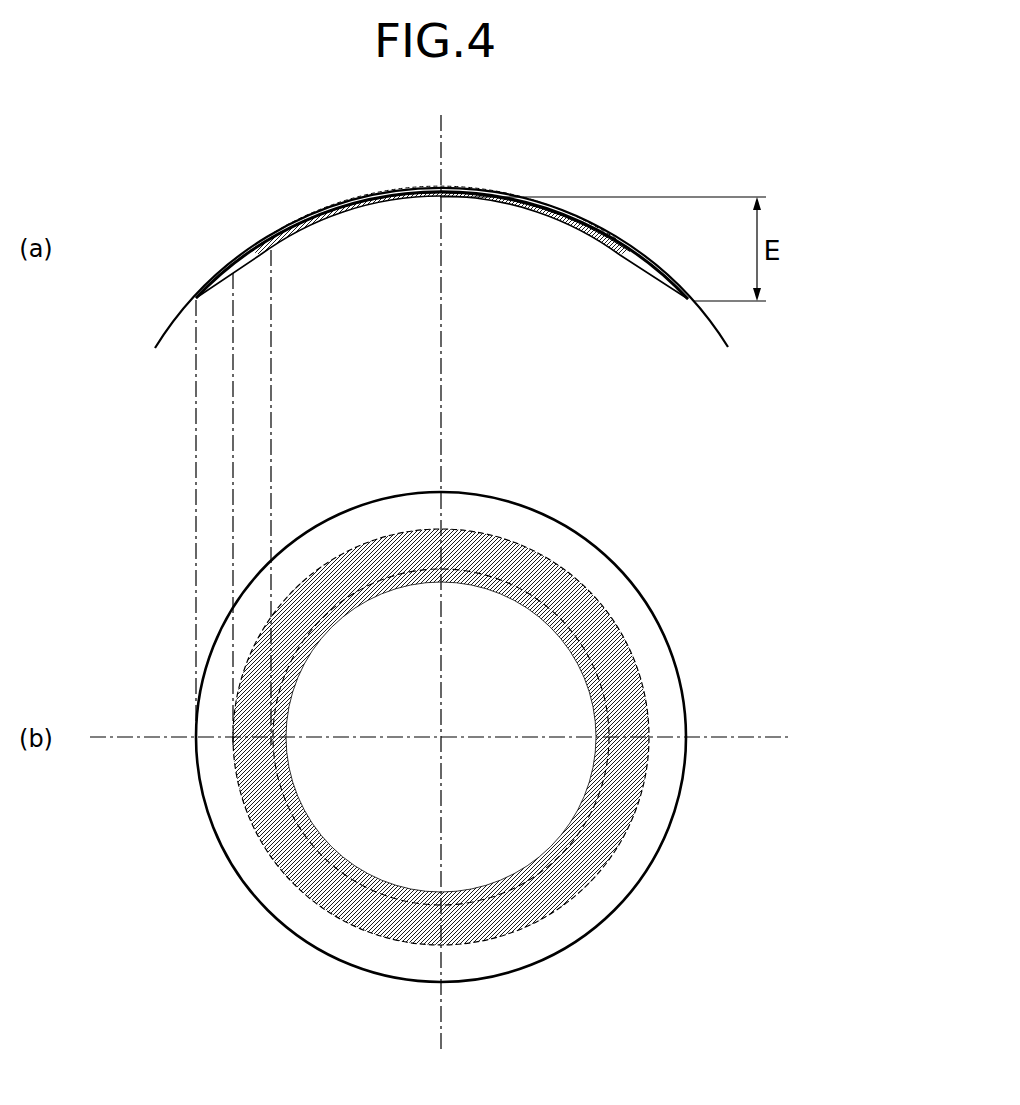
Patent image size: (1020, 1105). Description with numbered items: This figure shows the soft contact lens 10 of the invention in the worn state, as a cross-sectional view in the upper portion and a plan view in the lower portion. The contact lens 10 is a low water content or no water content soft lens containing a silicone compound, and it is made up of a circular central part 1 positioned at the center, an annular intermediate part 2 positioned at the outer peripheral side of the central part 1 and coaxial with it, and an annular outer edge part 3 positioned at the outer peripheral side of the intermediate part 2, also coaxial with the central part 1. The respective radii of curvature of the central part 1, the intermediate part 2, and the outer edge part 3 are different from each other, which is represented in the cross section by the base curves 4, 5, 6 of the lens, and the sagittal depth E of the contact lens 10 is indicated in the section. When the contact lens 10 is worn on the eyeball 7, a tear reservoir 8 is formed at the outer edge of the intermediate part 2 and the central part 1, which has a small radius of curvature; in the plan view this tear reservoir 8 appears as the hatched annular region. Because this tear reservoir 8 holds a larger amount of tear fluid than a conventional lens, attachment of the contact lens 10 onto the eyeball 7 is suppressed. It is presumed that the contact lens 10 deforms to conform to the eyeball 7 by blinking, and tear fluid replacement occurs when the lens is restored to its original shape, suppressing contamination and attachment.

The central part 1 is at (479, 606).
The intermediate part 2 is at (537, 582).
The outer edge part 3 is at (582, 572).
The base curve 4 is at (288, 232).
The base curve 5 is at (247, 260).
The base curve 6 is at (210, 292).
The eyeball 7 is at (713, 330).
The tear reservoir 8 is at (280, 233).
The contact lens 10 is at (541, 149).